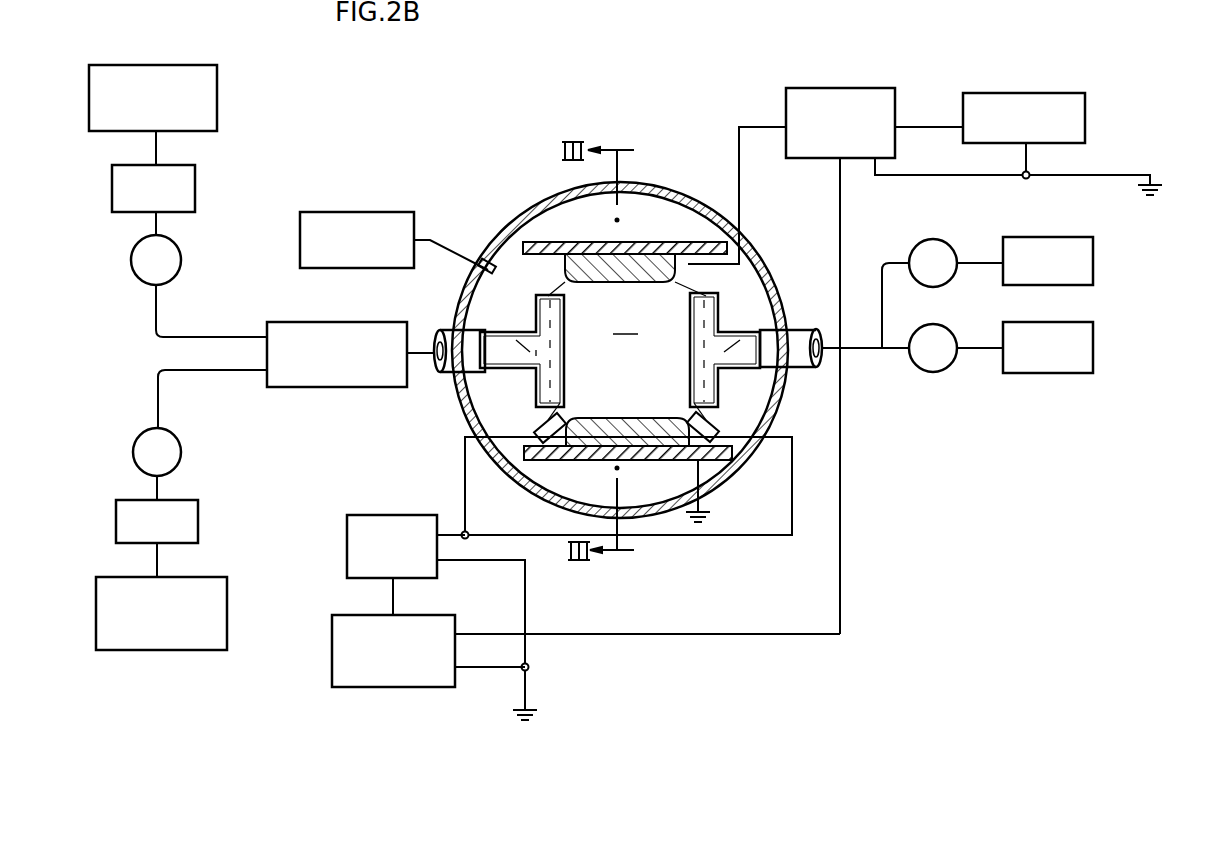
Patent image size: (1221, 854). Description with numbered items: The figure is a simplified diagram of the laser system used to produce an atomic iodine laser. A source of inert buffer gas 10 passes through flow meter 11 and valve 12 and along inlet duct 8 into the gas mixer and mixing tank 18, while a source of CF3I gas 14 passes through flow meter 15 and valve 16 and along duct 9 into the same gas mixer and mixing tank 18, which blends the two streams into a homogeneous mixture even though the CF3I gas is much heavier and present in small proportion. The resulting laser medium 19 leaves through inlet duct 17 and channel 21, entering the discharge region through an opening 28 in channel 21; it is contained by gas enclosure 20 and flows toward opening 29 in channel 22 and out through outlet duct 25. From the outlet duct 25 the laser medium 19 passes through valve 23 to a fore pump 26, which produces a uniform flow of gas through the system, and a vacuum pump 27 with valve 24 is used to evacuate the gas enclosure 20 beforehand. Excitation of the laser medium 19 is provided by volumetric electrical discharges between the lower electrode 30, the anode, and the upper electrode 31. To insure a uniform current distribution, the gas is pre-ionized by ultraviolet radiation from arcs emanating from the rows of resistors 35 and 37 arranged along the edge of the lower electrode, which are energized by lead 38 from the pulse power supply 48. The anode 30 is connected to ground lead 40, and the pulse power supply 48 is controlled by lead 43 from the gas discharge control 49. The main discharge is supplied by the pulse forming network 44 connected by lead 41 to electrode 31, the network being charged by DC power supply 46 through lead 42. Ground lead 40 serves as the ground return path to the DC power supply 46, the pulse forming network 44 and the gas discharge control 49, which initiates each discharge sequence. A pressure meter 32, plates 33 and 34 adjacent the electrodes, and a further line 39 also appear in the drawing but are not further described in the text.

The inlet duct 8 is at (215, 337).
The duct 9 is at (214, 370).
The source of inert buffer gas 10 is at (217, 98).
The flow meter 11 is at (195, 180).
The valve 12 is at (186, 268).
The source of CF3I gas 14 is at (221, 577).
The flow meter 15 is at (198, 510).
The valve 16 is at (178, 462).
The inlet duct 17 is at (422, 344).
The gas mixer and mixing tank 18 is at (330, 387).
The laser medium 19 is at (627, 322).
The gas enclosure 20 is at (520, 215).
The channel 21 is at (515, 336).
The channel 22 is at (732, 332).
The valve 23 is at (946, 324).
The valve 24 is at (946, 239).
The outlet duct 25 is at (823, 368).
The fore pump 26 is at (1056, 373).
The vacuum pump 27 is at (1047, 237).
The opening 28 is at (564, 350).
The opening 29 is at (690, 350).
The electrode 30 is at (592, 440).
The electrode 31 is at (652, 242).
The pressure meter 32 is at (340, 212).
The upper plate 33 is at (592, 242).
The lower plate 34 is at (672, 462).
The row of resistors 35 is at (538, 422).
The row of resistors 37 is at (714, 422).
The lead 38 is at (465, 512).
The control line 39 is at (578, 634).
The ground lead 40 is at (1152, 178).
The lead 41 is at (756, 124).
The lead 42 is at (942, 124).
The lead 43 is at (393, 597).
The pulse forming network 44 is at (840, 88).
The DC power supply 46 is at (1010, 93).
The pulse power supply 48 is at (375, 515).
The gas discharge control 49 is at (332, 668).